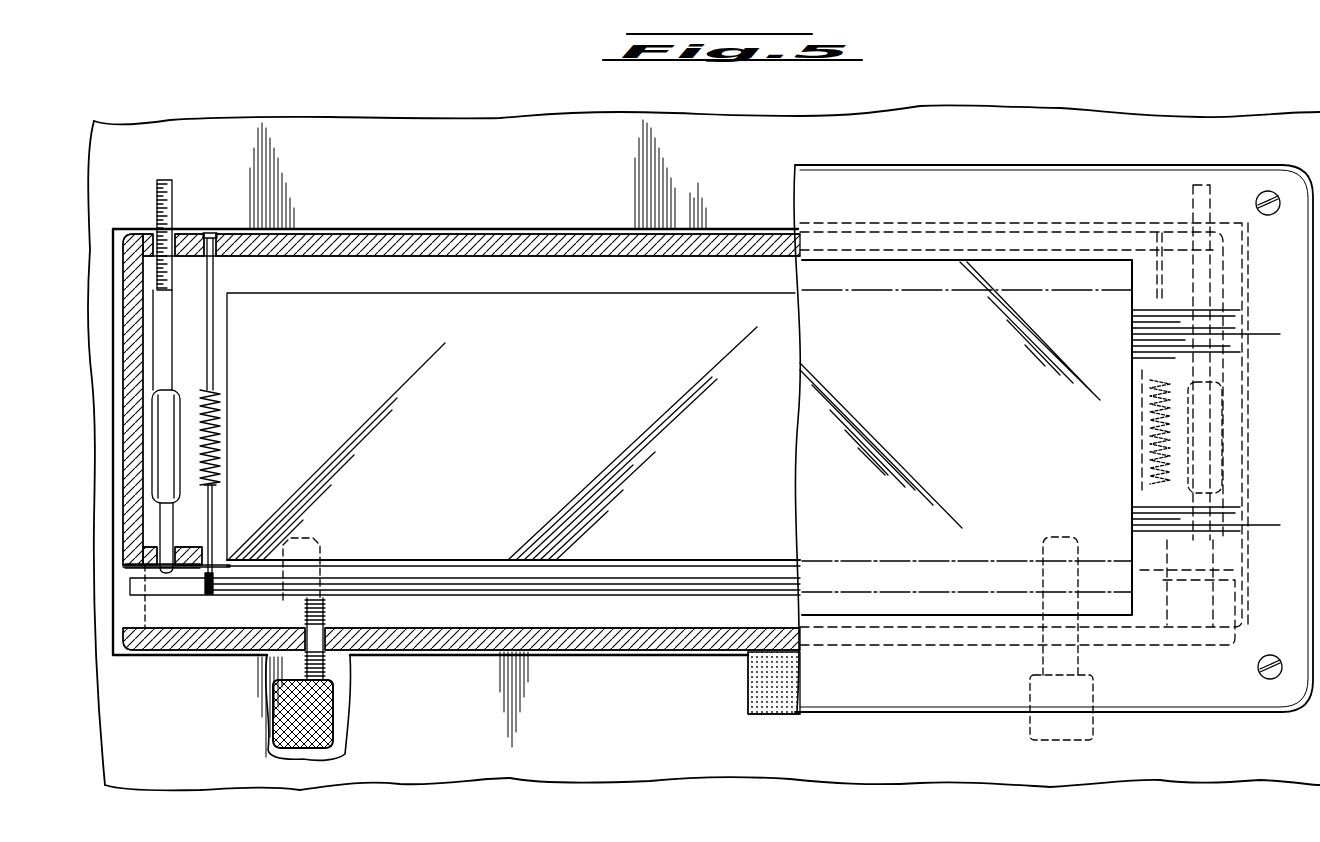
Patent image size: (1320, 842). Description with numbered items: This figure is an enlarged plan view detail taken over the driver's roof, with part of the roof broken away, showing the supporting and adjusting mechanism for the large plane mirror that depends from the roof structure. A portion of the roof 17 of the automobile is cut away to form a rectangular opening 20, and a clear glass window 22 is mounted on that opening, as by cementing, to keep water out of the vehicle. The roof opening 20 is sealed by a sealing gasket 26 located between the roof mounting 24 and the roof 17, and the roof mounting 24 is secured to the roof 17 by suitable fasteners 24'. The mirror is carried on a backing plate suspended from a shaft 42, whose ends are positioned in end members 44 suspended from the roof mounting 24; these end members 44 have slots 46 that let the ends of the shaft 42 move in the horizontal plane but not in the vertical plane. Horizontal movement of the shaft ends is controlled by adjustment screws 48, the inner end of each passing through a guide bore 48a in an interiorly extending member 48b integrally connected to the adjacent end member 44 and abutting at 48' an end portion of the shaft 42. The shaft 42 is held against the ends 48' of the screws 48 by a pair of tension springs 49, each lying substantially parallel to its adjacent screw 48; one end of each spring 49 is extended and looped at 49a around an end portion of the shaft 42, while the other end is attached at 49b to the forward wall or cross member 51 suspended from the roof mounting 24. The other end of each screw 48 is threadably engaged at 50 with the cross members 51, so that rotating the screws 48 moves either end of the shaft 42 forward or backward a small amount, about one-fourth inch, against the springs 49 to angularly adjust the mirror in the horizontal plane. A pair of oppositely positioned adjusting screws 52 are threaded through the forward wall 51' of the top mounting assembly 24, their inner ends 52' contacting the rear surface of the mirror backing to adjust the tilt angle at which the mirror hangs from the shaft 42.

The roof 17 is at (462, 188).
The rectangular opening 20 is at (590, 228).
The clear glass window 22 is at (802, 283).
The roof mounting 24 is at (1053, 426).
The fasteners 24' is at (1269, 442).
The sealing gasket 26 is at (748, 697).
The shaft 42 is at (130, 590).
The end members 44 is at (130, 499).
The slots 46 is at (130, 620).
The adjustment screws 48 is at (711, 477).
The abutting end of screw 48' is at (165, 565).
The guide bore 48a is at (160, 552).
The interiorly extending member 48b is at (188, 555).
The tension springs 49 is at (224, 456).
The looped end portion of spring 49a is at (212, 594).
The spring attachment 49b is at (208, 237).
The threaded engagement 50 is at (152, 240).
The cross member 51 is at (471, 226).
The forward wall 51' is at (461, 654).
The adjusting screws 52 is at (683, 675).
The inner ends of adjusting screws 52' is at (683, 578).